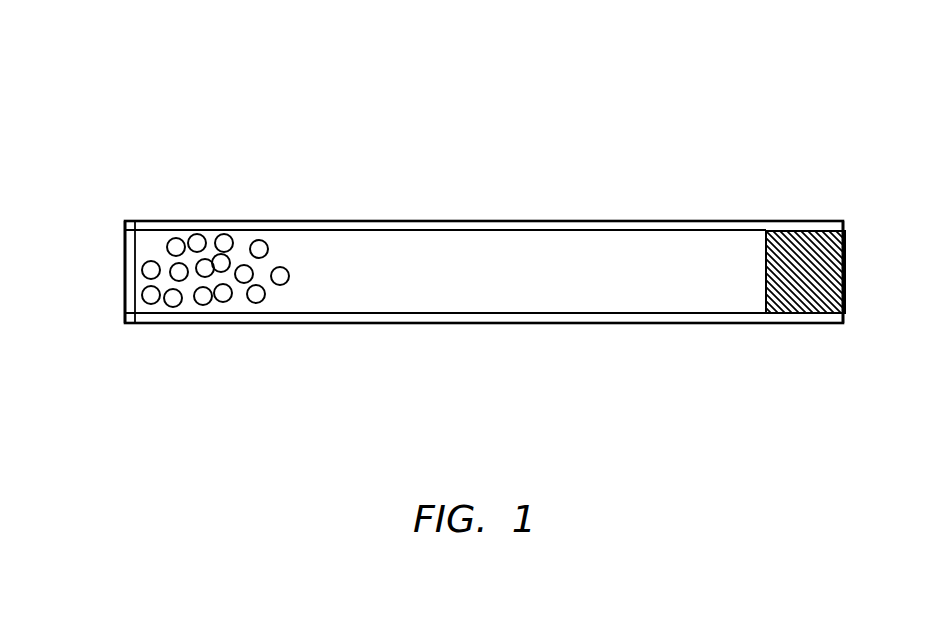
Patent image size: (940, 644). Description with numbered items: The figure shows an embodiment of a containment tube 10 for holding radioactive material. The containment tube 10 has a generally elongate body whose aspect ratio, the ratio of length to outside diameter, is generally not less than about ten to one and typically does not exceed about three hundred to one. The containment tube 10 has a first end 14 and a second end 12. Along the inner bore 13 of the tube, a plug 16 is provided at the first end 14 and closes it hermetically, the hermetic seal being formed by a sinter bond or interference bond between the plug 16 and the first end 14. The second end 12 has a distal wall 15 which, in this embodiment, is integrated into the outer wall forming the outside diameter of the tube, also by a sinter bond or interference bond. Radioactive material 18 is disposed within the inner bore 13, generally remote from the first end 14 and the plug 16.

The containment tube 10 is at (752, 58).
The second end 12 is at (117, 224).
The inner bore 13 is at (483, 282).
The first end 14 is at (864, 217).
The distal wall 15 is at (125, 286).
The plug 16 is at (835, 273).
The radioactive material 18 is at (213, 311).